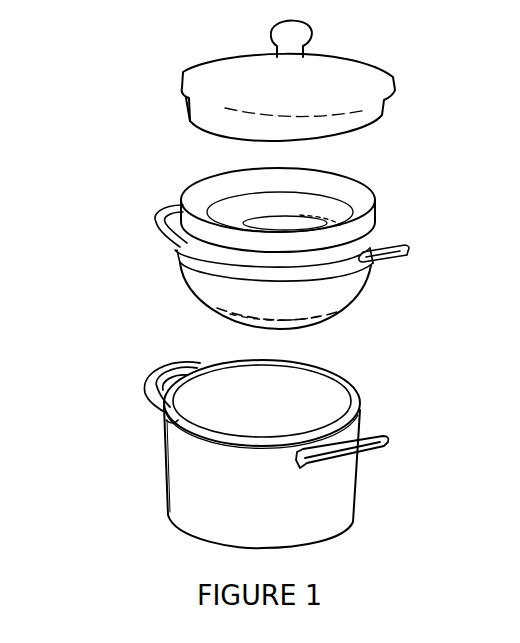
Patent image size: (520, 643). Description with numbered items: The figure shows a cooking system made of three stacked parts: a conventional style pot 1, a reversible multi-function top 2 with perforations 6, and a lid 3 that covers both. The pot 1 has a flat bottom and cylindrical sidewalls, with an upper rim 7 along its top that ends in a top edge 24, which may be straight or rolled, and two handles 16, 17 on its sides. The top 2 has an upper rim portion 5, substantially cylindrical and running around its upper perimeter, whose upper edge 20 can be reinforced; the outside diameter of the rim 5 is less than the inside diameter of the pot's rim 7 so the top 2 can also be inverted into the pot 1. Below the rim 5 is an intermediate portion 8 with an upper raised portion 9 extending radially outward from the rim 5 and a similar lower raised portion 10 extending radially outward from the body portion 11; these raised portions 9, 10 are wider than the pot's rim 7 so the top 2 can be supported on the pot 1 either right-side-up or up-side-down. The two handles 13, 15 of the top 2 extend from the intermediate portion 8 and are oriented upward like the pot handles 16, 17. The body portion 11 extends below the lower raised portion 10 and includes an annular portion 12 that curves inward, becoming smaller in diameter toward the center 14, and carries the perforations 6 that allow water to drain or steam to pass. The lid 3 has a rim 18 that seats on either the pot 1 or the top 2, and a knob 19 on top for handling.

The pot 1 is at (278, 447).
The reversible multi-function top 2 is at (277, 249).
The lid 3 is at (152, 76).
The upper rim portion 5 is at (383, 223).
The perforations 6 is at (337, 315).
The upper rim 7 is at (170, 430).
The intermediate portion 8 is at (194, 258).
The upper raised portion 9 is at (180, 231).
The lower raised portion 10 is at (234, 281).
The body portion 11 is at (213, 297).
The annular portion 12 is at (373, 289).
The top handle 13 is at (403, 261).
The center 14 is at (268, 325).
The top handle 15 is at (160, 212).
The pot handle 16 is at (379, 455).
The pot handle 17 is at (147, 374).
The lid rim 18 is at (194, 120).
The knob 19 is at (263, 39).
The upper edge 20 is at (228, 173).
The top edge 24 is at (337, 372).